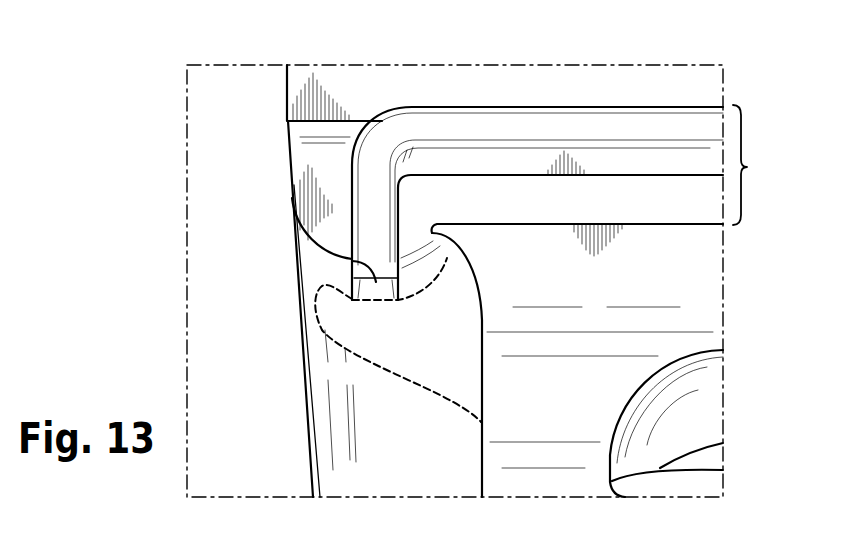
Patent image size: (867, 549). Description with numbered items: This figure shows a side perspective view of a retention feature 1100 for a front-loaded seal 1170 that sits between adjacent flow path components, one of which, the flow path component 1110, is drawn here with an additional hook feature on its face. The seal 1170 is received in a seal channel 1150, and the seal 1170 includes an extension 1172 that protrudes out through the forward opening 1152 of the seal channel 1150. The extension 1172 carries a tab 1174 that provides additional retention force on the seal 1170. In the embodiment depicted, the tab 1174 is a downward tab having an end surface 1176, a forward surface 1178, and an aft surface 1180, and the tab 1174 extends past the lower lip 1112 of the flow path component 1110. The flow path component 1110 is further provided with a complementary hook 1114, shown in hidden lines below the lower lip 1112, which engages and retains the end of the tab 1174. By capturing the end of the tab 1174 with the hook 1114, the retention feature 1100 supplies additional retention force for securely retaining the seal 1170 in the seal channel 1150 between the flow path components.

The retention feature 1100 is at (142, 148).
The flow path component 1110 is at (660, 82).
The lower lip 1112 is at (437, 233).
The complementary hook 1114 is at (393, 338).
The seal channel 1150 is at (776, 165).
The forward opening 1152 is at (303, 147).
The front-loaded seal 1170 is at (702, 124).
The extension 1172 is at (388, 135).
The tab 1174 is at (352, 221).
The end surface 1176 is at (352, 261).
The forward surface 1178 is at (352, 198).
The aft surface 1180 is at (383, 198).